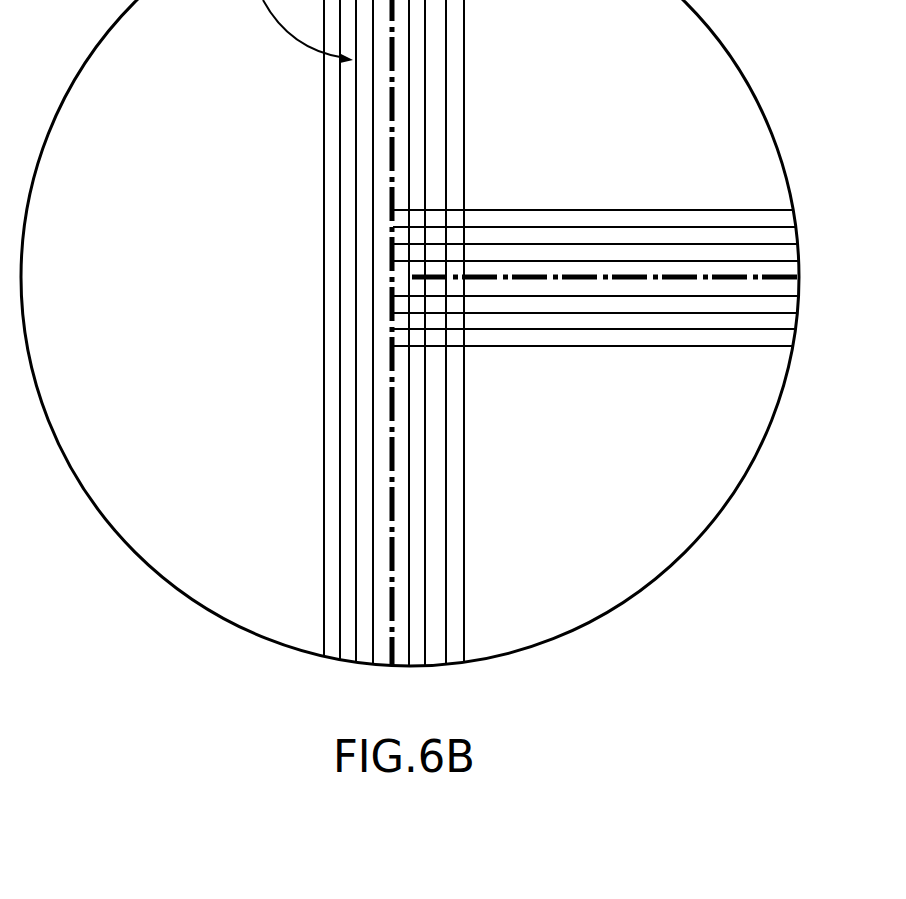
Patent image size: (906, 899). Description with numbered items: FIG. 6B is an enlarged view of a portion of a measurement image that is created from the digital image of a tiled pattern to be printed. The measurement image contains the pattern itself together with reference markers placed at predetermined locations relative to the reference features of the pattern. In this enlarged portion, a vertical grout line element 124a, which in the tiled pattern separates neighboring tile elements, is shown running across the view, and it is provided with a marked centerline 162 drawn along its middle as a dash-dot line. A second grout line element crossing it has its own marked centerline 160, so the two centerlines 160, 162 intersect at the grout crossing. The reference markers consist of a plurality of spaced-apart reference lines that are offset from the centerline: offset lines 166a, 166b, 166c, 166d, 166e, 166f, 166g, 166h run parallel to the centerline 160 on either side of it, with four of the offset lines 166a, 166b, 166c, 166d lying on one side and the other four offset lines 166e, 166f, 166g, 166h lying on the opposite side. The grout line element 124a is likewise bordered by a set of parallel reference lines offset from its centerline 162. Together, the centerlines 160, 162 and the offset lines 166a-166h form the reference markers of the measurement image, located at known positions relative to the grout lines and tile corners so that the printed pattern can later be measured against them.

The vertical grout line element 124a is at (608, 226).
The centerline 162 is at (574, 281).
The centerline 160 is at (382, 346).
The offset line 166a is at (312, 318).
The offset line 166b is at (328, 377).
The offset line 166c is at (344, 415).
The offset line 166d is at (361, 458).
The offset line 166e is at (397, 500).
The offset line 166f is at (413, 533).
The offset line 166g is at (434, 573).
The offset line 166h is at (452, 613).